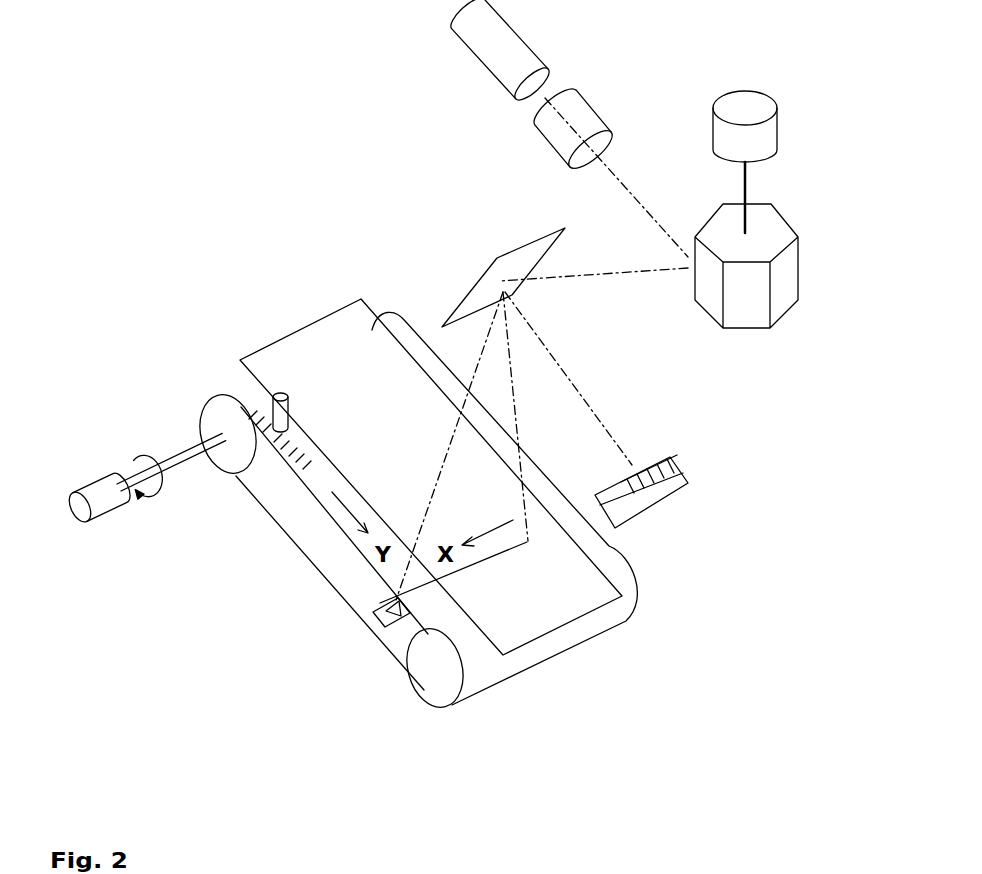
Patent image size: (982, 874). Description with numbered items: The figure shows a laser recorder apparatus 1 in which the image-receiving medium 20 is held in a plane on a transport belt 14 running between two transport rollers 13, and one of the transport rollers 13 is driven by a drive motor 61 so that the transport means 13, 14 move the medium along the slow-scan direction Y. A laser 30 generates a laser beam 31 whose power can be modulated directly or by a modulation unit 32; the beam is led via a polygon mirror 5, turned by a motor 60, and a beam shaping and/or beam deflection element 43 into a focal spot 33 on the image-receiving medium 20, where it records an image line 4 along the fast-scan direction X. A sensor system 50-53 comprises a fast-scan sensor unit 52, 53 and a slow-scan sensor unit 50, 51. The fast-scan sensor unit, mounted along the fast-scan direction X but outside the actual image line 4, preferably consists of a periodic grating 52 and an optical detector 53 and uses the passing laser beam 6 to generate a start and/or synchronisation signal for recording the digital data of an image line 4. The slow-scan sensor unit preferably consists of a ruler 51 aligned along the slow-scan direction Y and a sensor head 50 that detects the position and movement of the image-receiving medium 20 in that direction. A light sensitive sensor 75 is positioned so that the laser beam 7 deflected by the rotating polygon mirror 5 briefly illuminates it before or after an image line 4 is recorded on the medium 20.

The recording apparatus 1 is at (770, 669).
The image line 4 is at (487, 562).
The polygon mirror 5 is at (770, 230).
The passing laser beam 6 is at (547, 341).
The deflected laser beam 7 is at (473, 363).
The transport roller 13 is at (233, 445).
The transport belt 14 is at (482, 673).
The image-receiving medium 20 is at (345, 343).
The laser 30 is at (515, 58).
The laser beam 31 is at (545, 92).
The modulation unit 32 is at (587, 122).
The focal spot 33 is at (528, 541).
The beam shaping and/or beam deflection element 43 is at (520, 262).
The sensor head 50 is at (268, 396).
The ruler 51 is at (298, 470).
The periodic grating 52 is at (688, 465).
The optical detector 53 is at (690, 483).
The motor 60 is at (745, 105).
The drive motor 61 is at (102, 505).
The light sensitive sensor 75 is at (372, 625).